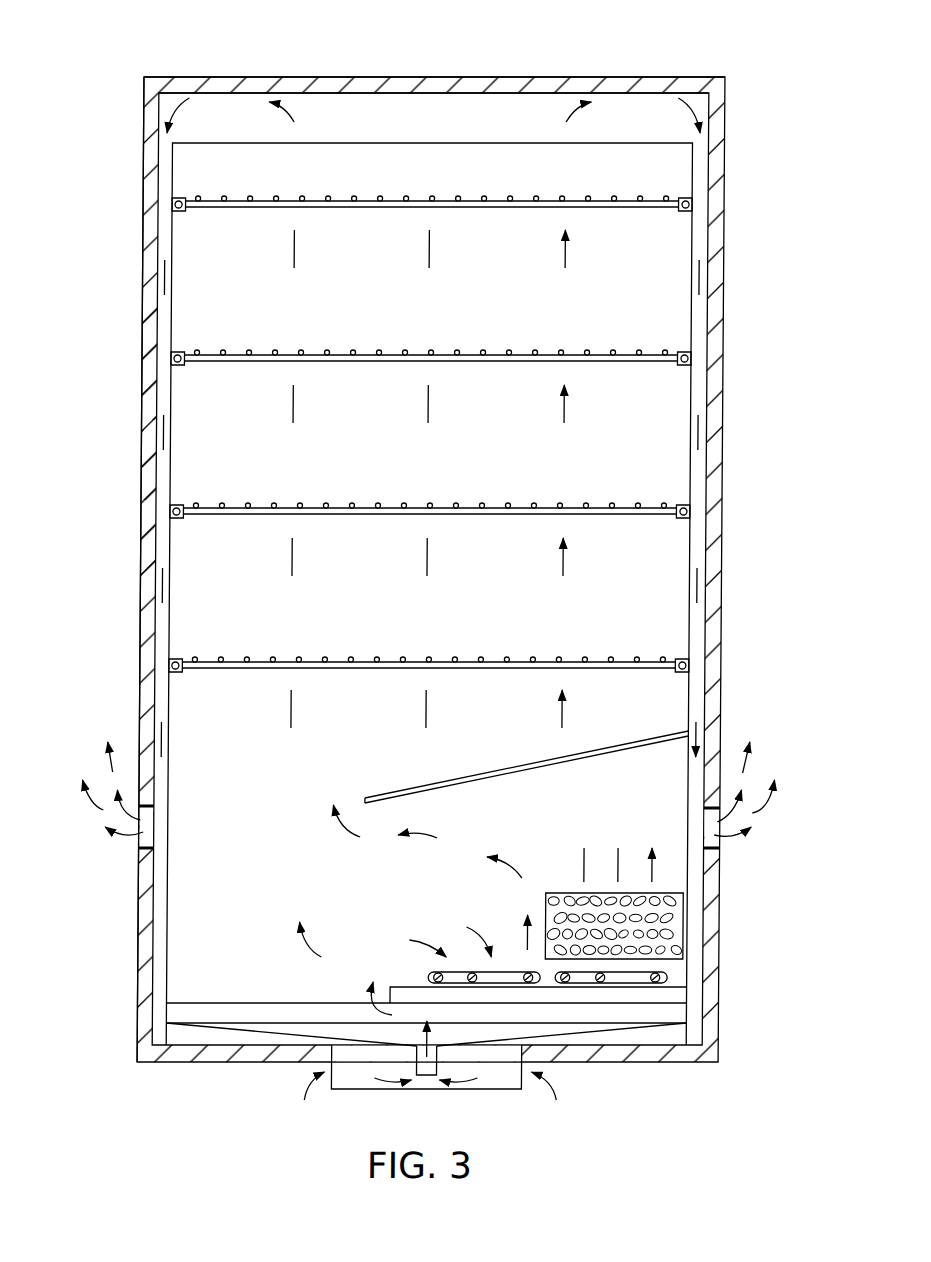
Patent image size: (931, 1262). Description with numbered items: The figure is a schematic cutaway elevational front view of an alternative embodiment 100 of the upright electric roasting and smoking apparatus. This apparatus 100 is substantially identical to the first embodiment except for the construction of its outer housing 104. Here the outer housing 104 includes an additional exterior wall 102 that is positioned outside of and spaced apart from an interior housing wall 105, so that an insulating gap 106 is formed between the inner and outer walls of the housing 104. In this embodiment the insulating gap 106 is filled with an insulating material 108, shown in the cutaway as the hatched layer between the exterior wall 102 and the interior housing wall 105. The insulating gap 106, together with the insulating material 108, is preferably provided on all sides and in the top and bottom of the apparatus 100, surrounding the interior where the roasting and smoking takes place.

The alternative embodiment of the upright electric roasting and smoking apparatus 100 is at (518, 57).
The exterior wall 102 is at (144, 253).
The outer housing 104 is at (203, 77).
The interior housing wall 105 is at (150, 470).
The insulating gap 106 is at (150, 362).
The insulating material 108 is at (150, 540).